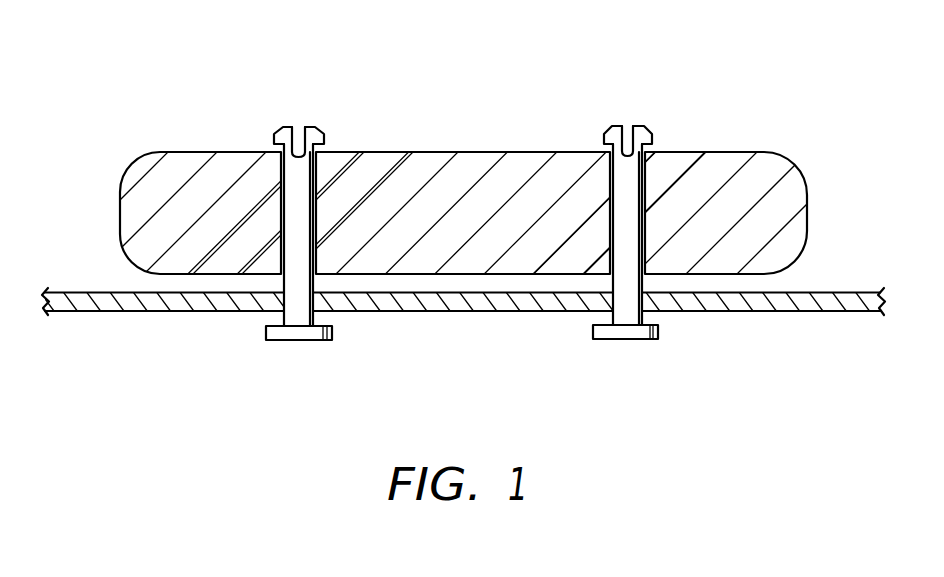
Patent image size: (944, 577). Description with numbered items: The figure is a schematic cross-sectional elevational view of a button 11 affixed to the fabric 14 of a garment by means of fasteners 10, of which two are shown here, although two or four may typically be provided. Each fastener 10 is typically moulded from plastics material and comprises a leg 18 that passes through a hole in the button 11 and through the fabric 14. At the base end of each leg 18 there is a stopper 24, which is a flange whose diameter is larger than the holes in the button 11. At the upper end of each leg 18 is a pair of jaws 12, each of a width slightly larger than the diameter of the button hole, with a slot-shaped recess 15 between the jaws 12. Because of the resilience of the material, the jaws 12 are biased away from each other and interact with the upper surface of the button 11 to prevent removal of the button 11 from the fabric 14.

The fastener 10 is at (243, 352).
The button 11 is at (149, 152).
The jaw 12 is at (317, 132).
The fabric 14 is at (803, 305).
The recess 15 is at (298, 138).
The leg 18 is at (296, 207).
The stopper 24 is at (303, 333).